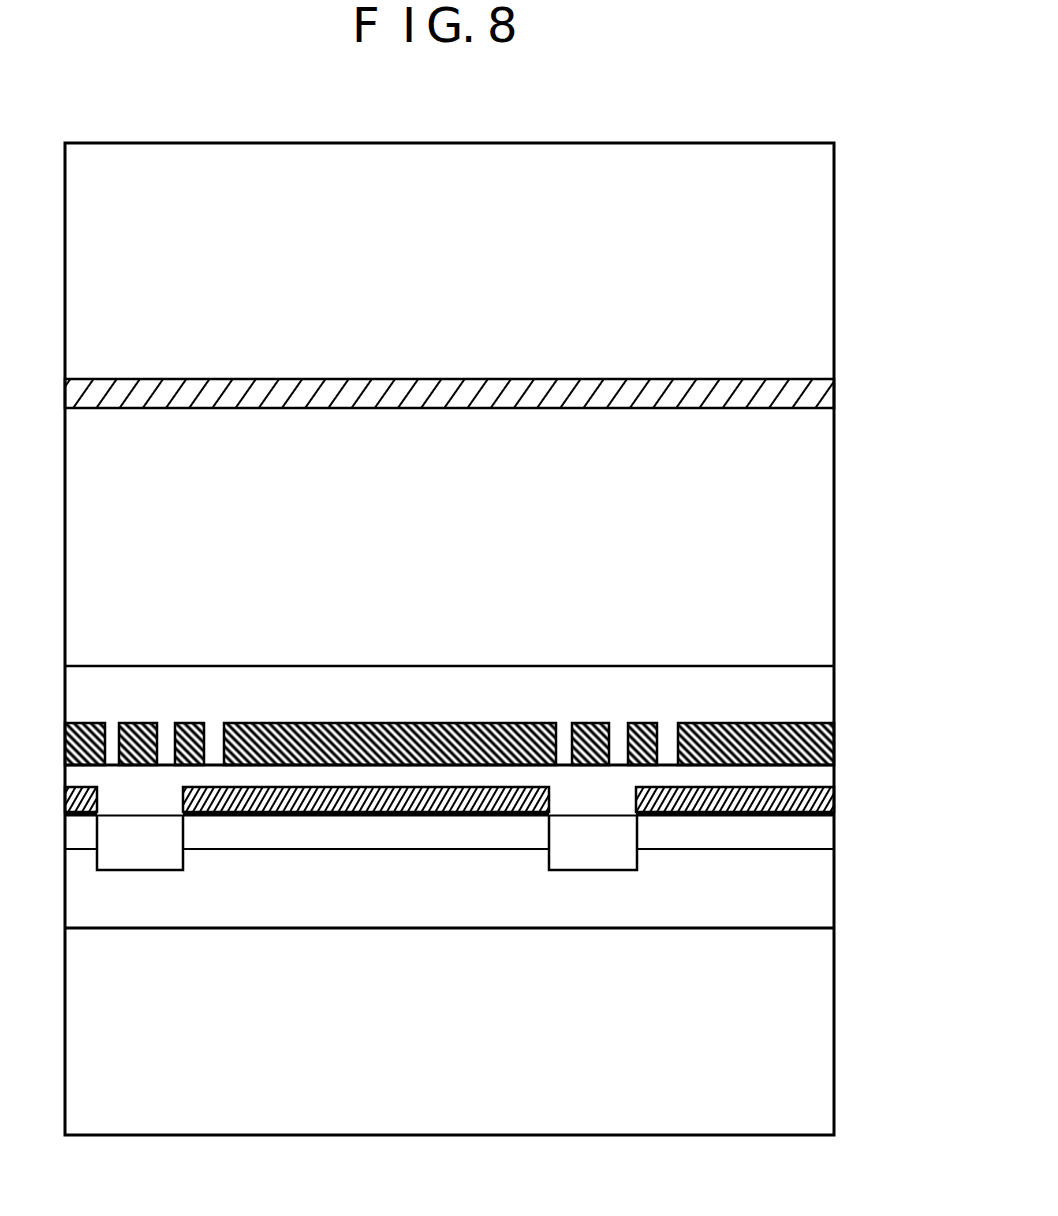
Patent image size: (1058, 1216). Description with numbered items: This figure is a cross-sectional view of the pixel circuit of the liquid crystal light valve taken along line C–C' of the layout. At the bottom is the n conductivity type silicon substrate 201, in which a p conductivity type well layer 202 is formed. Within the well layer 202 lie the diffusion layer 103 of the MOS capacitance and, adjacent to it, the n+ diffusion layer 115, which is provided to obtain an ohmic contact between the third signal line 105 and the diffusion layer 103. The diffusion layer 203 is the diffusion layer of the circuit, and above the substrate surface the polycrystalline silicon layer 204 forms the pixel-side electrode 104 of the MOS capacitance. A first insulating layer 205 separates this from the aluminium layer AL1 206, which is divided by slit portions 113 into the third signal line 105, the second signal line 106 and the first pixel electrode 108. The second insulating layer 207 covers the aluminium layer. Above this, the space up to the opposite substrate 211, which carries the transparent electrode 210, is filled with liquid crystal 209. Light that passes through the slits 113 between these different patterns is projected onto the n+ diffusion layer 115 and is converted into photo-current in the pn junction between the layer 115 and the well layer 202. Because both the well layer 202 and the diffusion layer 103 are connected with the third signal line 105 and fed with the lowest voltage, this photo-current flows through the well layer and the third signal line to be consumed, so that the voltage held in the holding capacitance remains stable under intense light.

The n conductivity type silicon substrate 201 is at (831, 1011).
The p conductivity type well layer 202 is at (831, 891).
The diffusion layer 203 is at (831, 835).
The polycrystalline silicon layer 204 is at (831, 800).
The first insulating layer 205 is at (831, 771).
The aluminium layer AL1 206 is at (831, 730).
The second insulating layer 207 is at (831, 687).
The liquid crystal 209 is at (831, 490).
The transparent electrode 210 is at (831, 390).
The opposite substrate 211 is at (831, 275).
The diffusion layer of the MOS capacitance 103 is at (443, 849).
The polycrystalline silicon layer of the MOS capacitance 104 is at (435, 787).
The third signal line 105 is at (130, 723).
The second signal line 106 is at (198, 723).
The first pixel electrode 108 is at (362, 723).
The slit portions 113 is at (563, 734).
The n+ diffusion layer 115 is at (618, 857).